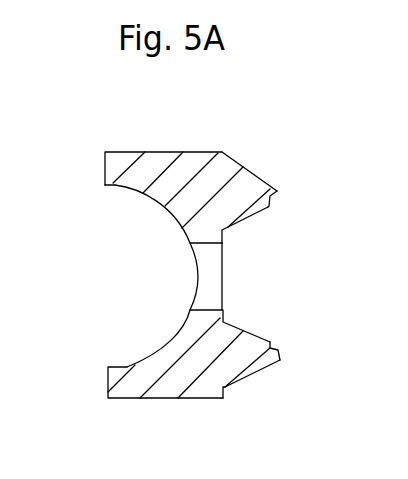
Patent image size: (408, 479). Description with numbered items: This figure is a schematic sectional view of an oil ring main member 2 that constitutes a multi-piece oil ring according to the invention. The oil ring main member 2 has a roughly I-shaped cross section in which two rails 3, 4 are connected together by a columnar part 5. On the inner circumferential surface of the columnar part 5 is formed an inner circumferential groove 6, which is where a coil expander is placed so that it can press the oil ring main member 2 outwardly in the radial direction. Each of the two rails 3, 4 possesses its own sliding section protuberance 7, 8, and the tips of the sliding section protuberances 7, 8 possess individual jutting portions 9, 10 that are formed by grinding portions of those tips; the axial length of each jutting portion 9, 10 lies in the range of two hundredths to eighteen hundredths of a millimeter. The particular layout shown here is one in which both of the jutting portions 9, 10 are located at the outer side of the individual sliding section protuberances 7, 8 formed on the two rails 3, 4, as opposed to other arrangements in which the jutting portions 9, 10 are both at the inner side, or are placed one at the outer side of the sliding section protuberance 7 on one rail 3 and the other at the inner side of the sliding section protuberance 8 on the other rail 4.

The oil ring main member 2 is at (92, 138).
The rail 3 is at (143, 163).
The rail 4 is at (154, 388).
The columnar part 5 is at (225, 262).
The inner circumferential groove 6 is at (110, 191).
The sliding section protuberance 7 is at (236, 172).
The sliding section protuberance 8 is at (249, 379).
The jutting portion 9 is at (279, 192).
The jutting portion 10 is at (280, 355).